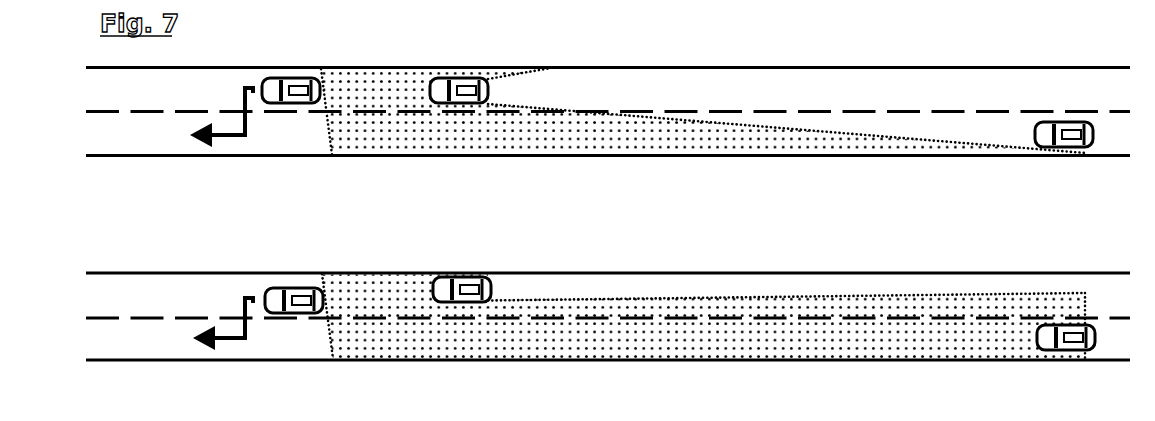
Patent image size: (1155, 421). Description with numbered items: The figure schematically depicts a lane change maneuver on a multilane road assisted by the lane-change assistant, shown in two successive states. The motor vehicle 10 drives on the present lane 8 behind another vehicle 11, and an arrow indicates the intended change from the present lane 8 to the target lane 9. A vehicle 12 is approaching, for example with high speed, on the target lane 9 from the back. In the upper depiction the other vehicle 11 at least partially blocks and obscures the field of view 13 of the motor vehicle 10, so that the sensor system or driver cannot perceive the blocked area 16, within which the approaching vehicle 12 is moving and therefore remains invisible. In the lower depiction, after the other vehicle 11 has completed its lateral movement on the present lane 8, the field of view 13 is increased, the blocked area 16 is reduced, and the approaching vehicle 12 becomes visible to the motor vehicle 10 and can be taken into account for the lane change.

The present lane 8 is at (205, 102).
The target lane 9 is at (120, 146).
The motor vehicle 10 is at (294, 59).
The other vehicle 11 is at (461, 61).
The approaching vehicle 12 is at (1102, 131).
The field of view 13 is at (374, 102).
The blocked area 16 is at (602, 102).